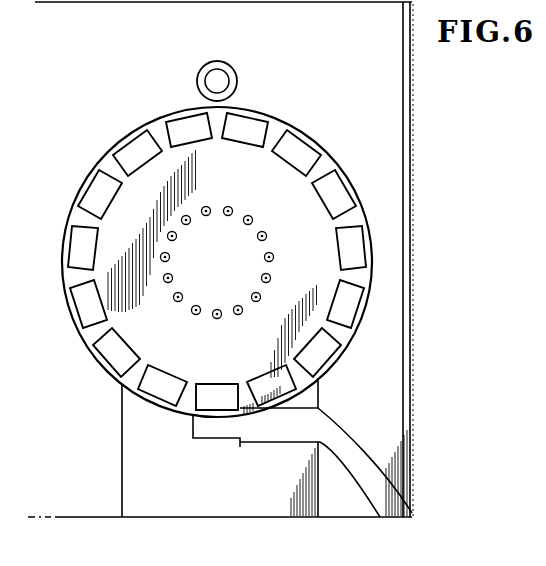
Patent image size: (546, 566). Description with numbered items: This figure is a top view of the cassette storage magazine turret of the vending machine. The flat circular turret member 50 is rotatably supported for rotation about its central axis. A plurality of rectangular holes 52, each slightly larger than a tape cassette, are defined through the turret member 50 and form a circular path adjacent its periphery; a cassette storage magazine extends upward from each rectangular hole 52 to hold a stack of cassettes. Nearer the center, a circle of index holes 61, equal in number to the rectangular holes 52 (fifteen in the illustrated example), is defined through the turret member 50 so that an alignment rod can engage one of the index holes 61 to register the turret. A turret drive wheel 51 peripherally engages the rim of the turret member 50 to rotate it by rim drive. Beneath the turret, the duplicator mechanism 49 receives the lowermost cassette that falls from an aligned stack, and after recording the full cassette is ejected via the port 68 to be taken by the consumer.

The duplicator mechanism 49 is at (246, 497).
The turret member 50 is at (364, 202).
The turret drive wheel 51 is at (237, 78).
The rectangular holes 52 is at (347, 303).
The index holes 61 is at (207, 206).
The port 68 is at (370, 462).